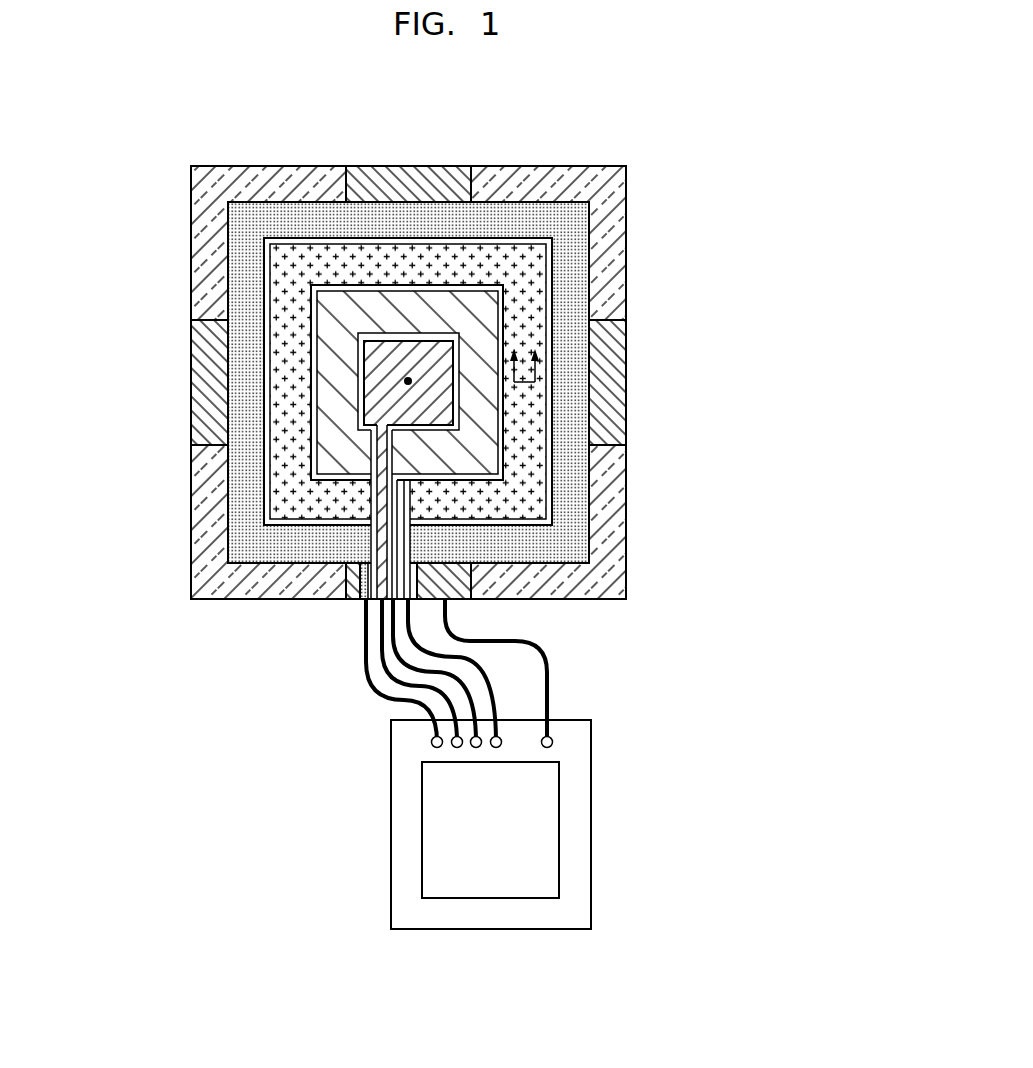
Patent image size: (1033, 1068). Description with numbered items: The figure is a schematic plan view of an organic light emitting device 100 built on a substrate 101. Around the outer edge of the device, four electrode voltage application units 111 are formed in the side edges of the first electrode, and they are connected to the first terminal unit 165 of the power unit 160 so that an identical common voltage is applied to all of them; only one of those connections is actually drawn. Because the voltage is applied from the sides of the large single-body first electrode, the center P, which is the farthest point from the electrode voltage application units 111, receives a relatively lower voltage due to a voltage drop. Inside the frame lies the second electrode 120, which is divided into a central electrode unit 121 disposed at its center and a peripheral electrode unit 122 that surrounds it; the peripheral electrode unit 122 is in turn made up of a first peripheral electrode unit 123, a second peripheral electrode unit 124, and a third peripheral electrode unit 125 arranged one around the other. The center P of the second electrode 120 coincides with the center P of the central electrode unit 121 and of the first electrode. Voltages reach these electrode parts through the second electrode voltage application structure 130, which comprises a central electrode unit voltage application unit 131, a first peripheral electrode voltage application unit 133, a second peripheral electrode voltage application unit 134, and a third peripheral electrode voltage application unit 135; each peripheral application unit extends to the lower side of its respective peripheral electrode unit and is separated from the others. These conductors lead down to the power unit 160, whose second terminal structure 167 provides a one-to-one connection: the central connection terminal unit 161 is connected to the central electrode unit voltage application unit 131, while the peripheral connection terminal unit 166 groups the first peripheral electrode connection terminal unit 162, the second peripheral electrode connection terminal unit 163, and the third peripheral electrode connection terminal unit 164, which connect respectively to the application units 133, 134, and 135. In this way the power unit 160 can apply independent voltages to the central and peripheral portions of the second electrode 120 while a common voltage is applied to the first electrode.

The organic light emitting device 100 is at (440, 377).
The substrate 101 is at (617, 232).
The electrode voltage application unit 111 is at (410, 176).
The second electrode 120 is at (531, 400).
The central electrode unit 121 is at (483, 452).
The peripheral electrode unit 122 is at (499, 400).
The first peripheral electrode unit 123 is at (440, 410).
The second peripheral electrode unit 124 is at (508, 486).
The third peripheral electrode unit 125 is at (565, 530).
The second electrode voltage application structure 130 is at (232, 512).
The central electrode unit voltage application unit 131 is at (378, 491).
The first peripheral electrode voltage application unit 133 is at (392, 516).
The second peripheral electrode voltage application unit 134 is at (407, 547).
The third peripheral electrode voltage application unit 135 is at (367, 573).
The power unit 160 is at (441, 764).
The central connection terminal unit 161 is at (453, 737).
The first peripheral electrode connection terminal unit 162 is at (476, 748).
The second peripheral electrode connection terminal unit 163 is at (496, 748).
The third peripheral electrode connection terminal unit 164 is at (436, 748).
The first terminal unit 165 is at (549, 747).
The peripheral connection terminal unit 166 is at (375, 786).
The second terminal structure 167 is at (342, 777).
The center P is at (408, 381).